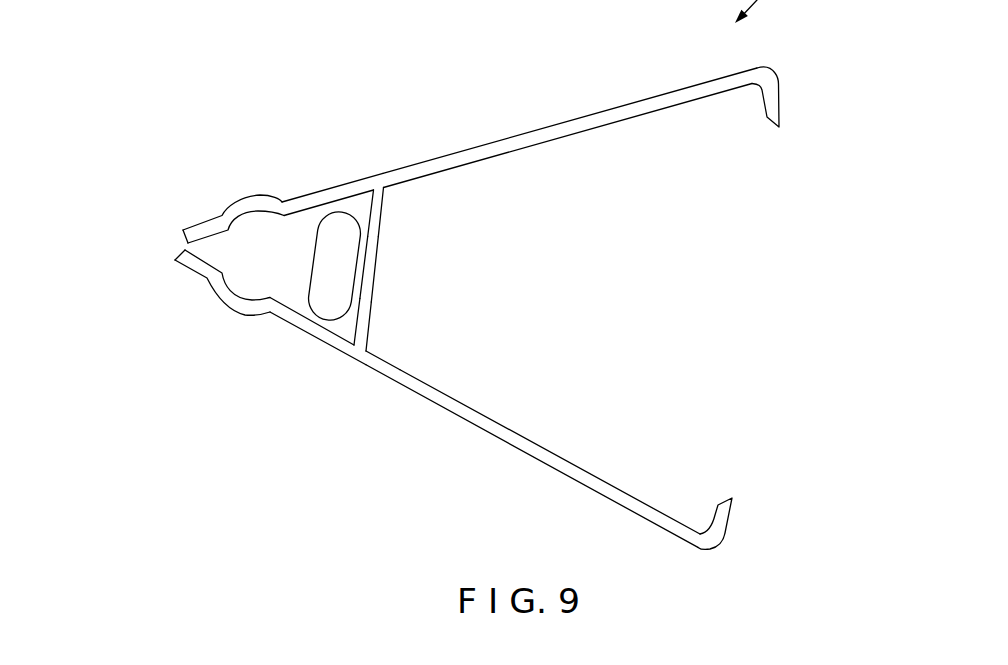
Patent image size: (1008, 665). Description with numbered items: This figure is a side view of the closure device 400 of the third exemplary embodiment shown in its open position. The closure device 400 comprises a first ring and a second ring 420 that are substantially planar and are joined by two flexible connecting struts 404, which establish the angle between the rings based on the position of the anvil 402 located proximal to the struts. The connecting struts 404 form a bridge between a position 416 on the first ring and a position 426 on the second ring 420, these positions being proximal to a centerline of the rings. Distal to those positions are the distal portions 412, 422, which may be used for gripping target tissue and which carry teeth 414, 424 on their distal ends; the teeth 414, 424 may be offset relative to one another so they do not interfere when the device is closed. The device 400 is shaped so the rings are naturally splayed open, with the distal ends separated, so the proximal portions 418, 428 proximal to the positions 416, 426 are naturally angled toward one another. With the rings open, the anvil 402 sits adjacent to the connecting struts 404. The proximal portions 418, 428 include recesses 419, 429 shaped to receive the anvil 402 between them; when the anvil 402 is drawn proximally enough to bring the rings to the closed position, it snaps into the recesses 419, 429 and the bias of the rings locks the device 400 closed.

The closure device 400 is at (132, 86).
The anvil 402 is at (338, 258).
The connecting struts 404 is at (372, 265).
The distal portion 412 is at (562, 120).
The tooth 414 is at (780, 112).
The position 416 is at (380, 174).
The proximal portion 418 is at (318, 189).
The recess 419 is at (242, 197).
The second ring 420 is at (622, 451).
The distal portion 422 is at (557, 471).
The tooth 424 is at (732, 510).
The position 426 is at (359, 362).
The proximal portion 428 is at (312, 337).
The recess 429 is at (232, 308).